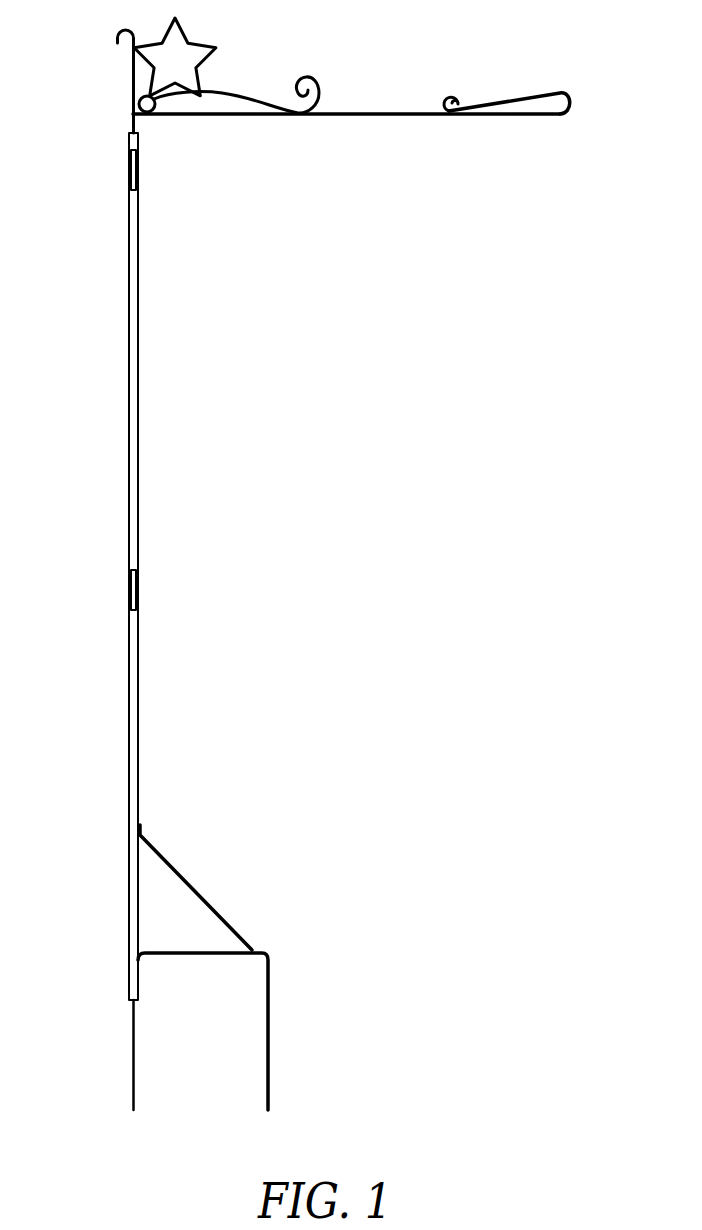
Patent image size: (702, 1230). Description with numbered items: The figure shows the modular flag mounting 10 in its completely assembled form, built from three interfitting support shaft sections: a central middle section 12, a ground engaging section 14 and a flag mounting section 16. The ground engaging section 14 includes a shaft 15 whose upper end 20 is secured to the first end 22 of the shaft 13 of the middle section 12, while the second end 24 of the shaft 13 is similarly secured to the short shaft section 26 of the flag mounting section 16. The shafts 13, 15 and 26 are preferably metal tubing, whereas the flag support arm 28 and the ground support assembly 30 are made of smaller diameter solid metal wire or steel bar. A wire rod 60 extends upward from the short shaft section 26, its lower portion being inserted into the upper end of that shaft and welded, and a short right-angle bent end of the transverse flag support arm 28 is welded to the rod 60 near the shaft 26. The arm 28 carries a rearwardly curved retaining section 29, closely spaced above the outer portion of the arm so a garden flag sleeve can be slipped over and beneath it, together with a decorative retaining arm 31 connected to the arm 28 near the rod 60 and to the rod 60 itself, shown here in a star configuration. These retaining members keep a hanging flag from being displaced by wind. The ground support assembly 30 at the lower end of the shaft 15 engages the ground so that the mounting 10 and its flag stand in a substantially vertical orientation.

The modular flag mounting 10 is at (387, 589).
The middle section 12 is at (139, 273).
The shaft of center section 13 is at (131, 432).
The ground engaging section 14 is at (139, 771).
The shaft of ground engaging section 15 is at (130, 692).
The flag mounting section 16 is at (307, 118).
The upper end of shaft 20 is at (138, 634).
The first end of shaft 22 is at (138, 575).
The second end of middle shaft section 24 is at (138, 222).
The shaft section of flag mounting section 26 is at (138, 172).
The flag support arm 28 is at (424, 117).
The rearwardly curved end section 29 is at (517, 97).
The ground support assembly 30 is at (250, 948).
The decorative retaining arm 31 is at (233, 96).
The wire rod 60 is at (131, 79).